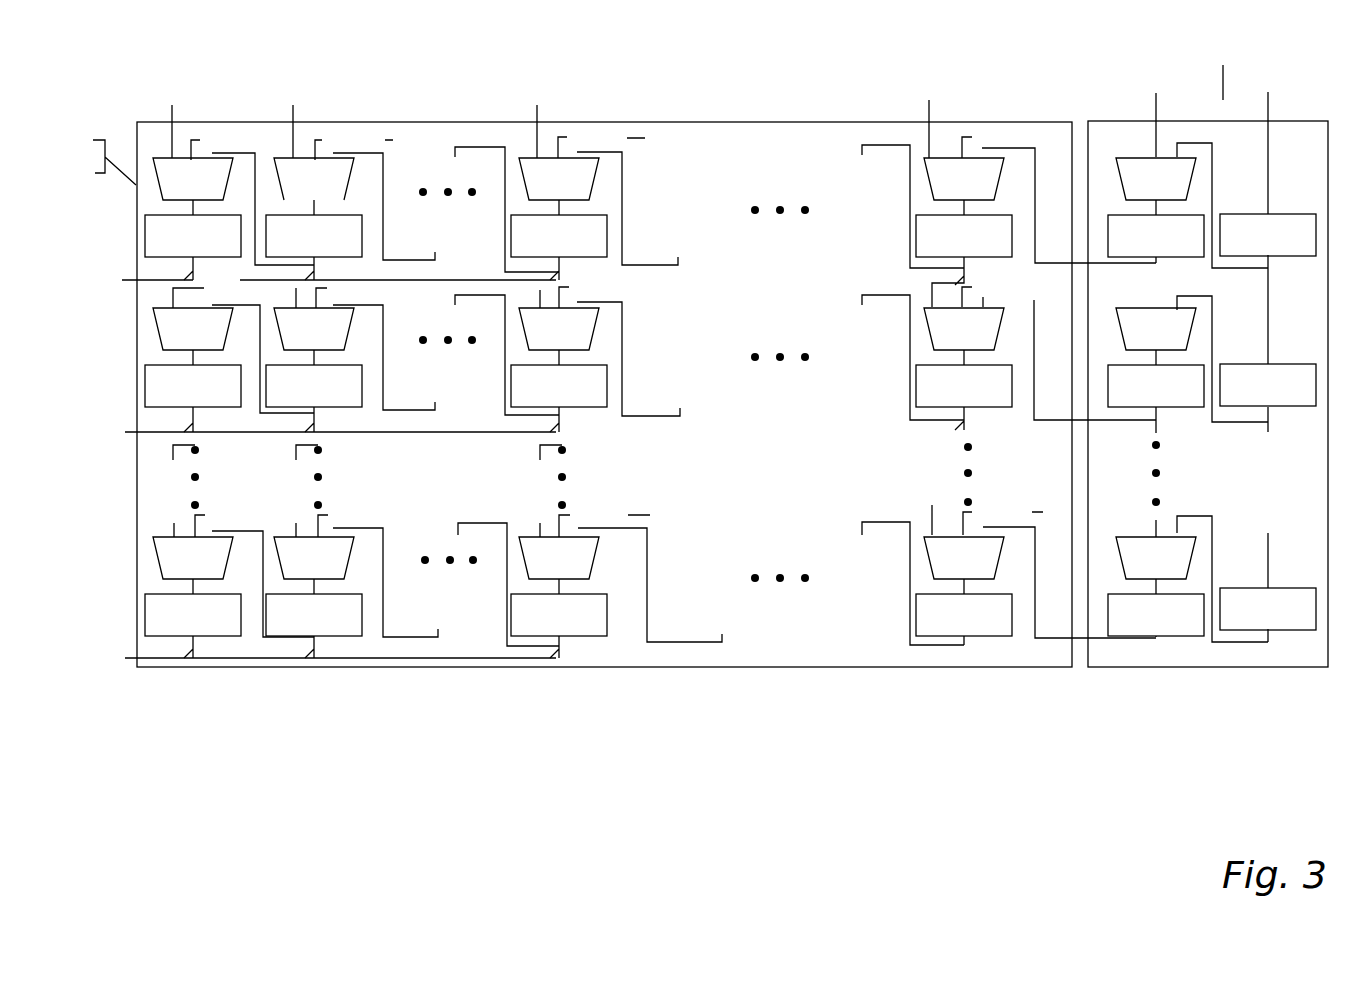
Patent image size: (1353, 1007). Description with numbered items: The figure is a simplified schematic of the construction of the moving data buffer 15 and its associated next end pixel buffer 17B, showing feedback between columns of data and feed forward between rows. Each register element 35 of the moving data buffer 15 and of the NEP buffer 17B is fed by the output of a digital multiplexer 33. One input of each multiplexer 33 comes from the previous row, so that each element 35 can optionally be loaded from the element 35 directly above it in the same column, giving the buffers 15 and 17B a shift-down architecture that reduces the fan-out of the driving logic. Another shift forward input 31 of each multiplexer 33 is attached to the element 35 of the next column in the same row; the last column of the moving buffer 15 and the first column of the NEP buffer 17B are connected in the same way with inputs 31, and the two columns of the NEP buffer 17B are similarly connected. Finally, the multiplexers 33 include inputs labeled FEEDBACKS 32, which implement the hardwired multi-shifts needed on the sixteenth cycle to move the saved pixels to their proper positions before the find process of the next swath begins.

The moving data buffer 15 is at (466, 127).
The next end pixel (NEP) buffer 17B is at (1117, 125).
The shift forward input 31 is at (740, 404).
The feedbacks input 32 is at (340, 62).
The digital multiplexer 33 is at (674, 376).
The register element 35 is at (730, 436).